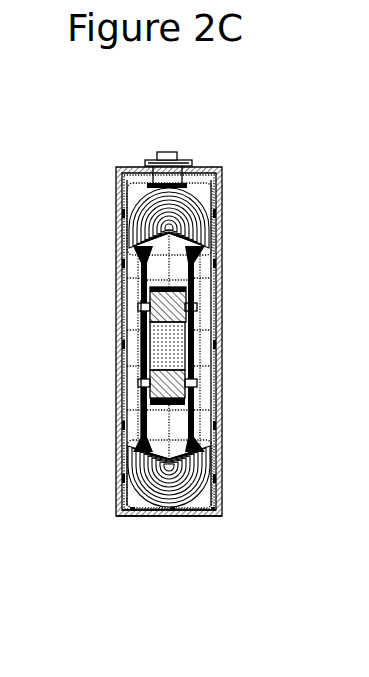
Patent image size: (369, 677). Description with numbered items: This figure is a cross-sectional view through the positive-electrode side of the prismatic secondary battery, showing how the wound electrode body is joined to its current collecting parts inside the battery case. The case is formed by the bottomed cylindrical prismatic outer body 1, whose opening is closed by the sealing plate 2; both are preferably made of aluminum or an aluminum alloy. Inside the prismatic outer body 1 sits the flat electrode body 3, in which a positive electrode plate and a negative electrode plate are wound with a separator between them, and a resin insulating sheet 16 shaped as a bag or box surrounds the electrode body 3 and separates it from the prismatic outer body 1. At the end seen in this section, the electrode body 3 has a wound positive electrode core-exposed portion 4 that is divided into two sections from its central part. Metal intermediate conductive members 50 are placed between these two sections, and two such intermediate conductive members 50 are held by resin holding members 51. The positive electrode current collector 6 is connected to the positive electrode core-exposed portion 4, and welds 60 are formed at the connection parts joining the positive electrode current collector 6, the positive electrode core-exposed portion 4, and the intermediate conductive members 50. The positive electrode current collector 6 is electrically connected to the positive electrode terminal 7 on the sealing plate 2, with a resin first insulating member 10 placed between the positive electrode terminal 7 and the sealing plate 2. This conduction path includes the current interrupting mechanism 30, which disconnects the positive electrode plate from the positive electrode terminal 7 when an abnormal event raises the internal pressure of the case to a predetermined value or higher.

The prismatic outer body 1 is at (190, 517).
The sealing plate 2 is at (202, 167).
The electrode body 3 is at (182, 421).
The positive electrode core-exposed portion 4 is at (155, 420).
The positive electrode current collector 6 is at (198, 258).
The positive electrode terminal 7 is at (160, 156).
The first insulating member 10 is at (147, 158).
The insulating sheet 16 is at (120, 510).
The current interrupting mechanism 30 is at (141, 181).
The intermediate conductive member 50 is at (150, 305).
The holding member 51 is at (187, 405).
The weld 60 is at (182, 330).